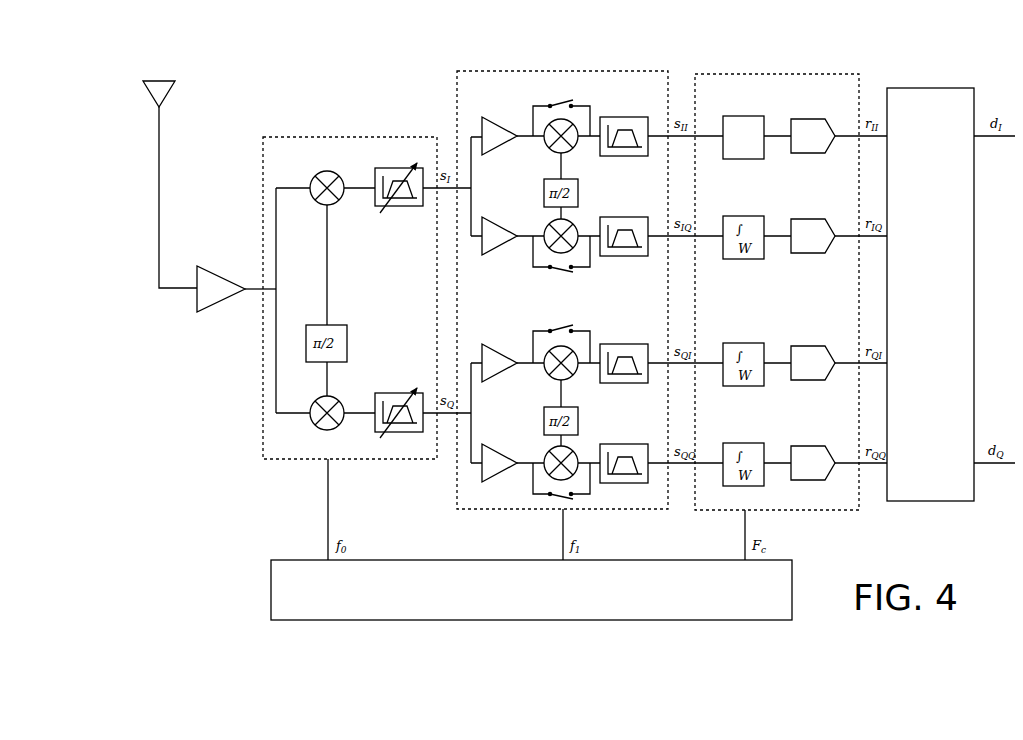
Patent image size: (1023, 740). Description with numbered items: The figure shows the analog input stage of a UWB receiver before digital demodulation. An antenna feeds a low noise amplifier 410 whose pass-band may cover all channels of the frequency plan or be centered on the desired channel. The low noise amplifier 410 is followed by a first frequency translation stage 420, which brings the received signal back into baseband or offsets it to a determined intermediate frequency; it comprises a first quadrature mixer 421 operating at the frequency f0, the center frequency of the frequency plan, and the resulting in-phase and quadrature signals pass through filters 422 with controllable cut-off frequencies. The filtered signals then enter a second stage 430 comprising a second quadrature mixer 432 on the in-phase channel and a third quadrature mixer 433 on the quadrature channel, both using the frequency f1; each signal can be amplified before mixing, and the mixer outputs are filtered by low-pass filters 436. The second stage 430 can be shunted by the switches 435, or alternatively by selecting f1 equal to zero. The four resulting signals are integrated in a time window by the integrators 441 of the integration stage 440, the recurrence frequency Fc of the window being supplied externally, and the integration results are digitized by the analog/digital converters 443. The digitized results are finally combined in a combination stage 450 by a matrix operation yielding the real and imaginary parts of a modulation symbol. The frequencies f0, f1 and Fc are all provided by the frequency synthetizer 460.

The low noise amplifier 410 is at (216, 312).
The first frequency translation stage 420 is at (343, 137).
The first quadrature mixer 421 is at (308, 157).
The variable filter 422 is at (393, 168).
The second stage 430 is at (590, 71).
The second quadrature mixer 432 is at (509, 100).
The third quadrature mixer 433 is at (498, 495).
The switches 435 is at (552, 104).
The low-pass filters 436 is at (628, 117).
The integration and decision stage 440 is at (773, 74).
The integrators 441 is at (727, 116).
The analog/digital converters 443 is at (818, 119).
The combination stage 450 is at (925, 88).
The frequency synthetizer 460 is at (271, 580).